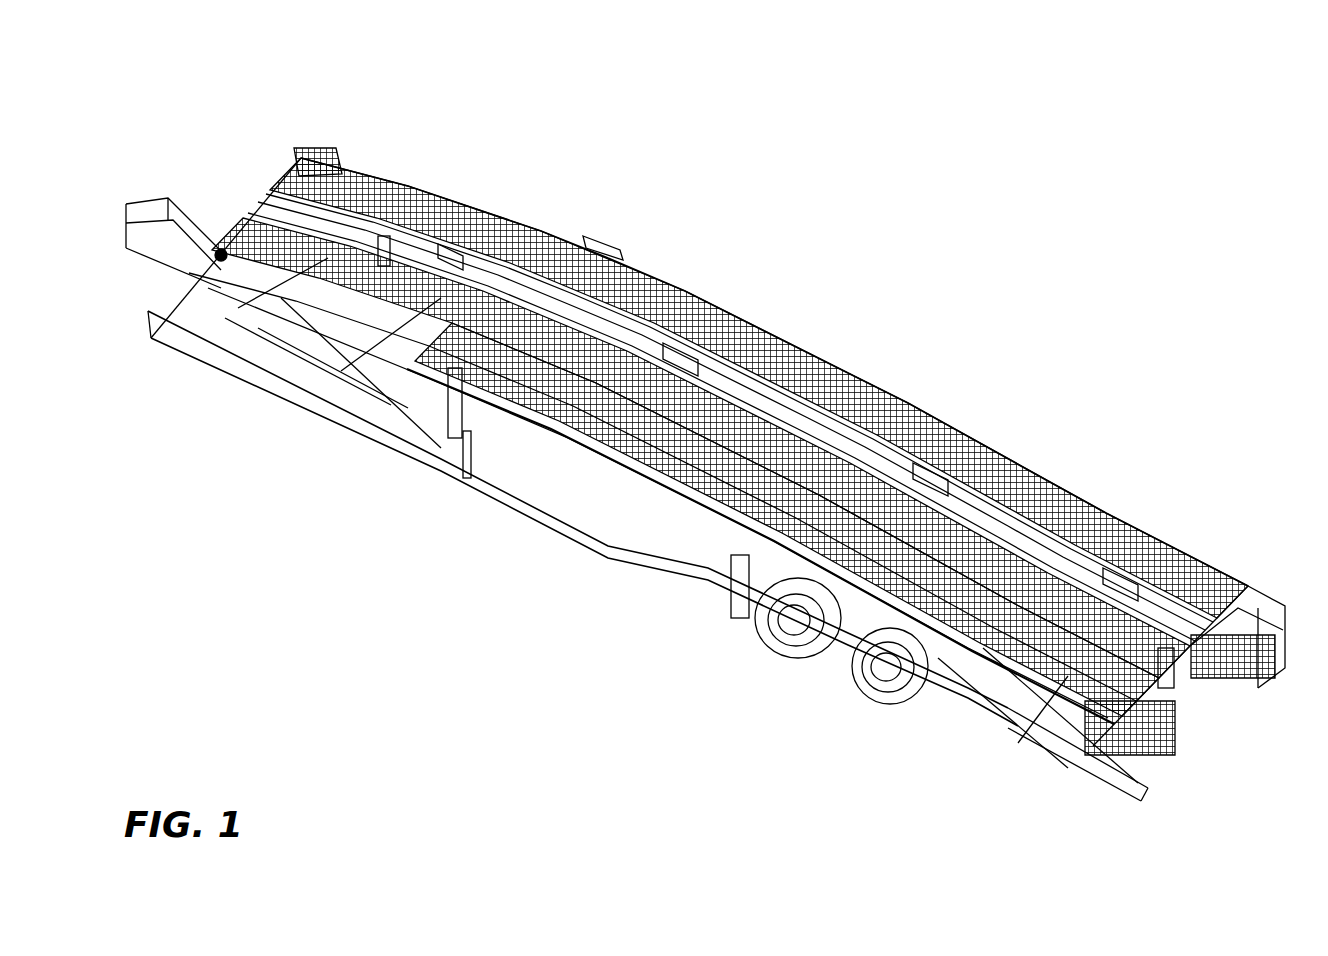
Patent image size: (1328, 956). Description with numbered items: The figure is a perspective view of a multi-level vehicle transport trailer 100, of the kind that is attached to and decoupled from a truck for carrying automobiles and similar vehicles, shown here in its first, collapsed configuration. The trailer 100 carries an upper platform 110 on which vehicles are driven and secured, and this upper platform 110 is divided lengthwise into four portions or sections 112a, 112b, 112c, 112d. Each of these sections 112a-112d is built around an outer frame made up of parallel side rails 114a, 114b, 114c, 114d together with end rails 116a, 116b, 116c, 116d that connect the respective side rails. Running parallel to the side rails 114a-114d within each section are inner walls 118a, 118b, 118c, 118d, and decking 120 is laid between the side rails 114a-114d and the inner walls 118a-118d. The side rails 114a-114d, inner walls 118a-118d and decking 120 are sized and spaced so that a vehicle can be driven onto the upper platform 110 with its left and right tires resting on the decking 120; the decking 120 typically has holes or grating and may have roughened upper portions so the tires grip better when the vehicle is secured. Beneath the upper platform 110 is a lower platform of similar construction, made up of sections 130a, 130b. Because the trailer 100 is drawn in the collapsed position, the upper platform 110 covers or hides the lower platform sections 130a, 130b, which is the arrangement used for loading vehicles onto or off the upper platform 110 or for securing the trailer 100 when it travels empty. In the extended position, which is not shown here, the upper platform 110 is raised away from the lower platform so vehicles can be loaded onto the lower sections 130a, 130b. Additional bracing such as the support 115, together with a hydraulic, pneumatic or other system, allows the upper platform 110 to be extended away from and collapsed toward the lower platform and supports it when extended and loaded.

The vehicle transport trailer 100 is at (1118, 108).
The upper platform 110 is at (880, 235).
The section 112a is at (585, 200).
The section 112b is at (738, 262).
The section 112c is at (962, 405).
The section 112d is at (1167, 507).
The side rail 114a is at (527, 222).
The side rail 114b is at (767, 322).
The side rail 114c is at (898, 408).
The side rail 114d is at (1098, 508).
The support 115 is at (682, 283).
The end rail 116a is at (377, 240).
The end rail 116b is at (533, 270).
The end rail 116c is at (765, 460).
The end rail 116d is at (1163, 657).
The inner wall 118a is at (443, 240).
The inner wall 118b is at (670, 343).
The inner wall 118c is at (920, 463).
The inner wall 118d is at (1110, 567).
The decking 120 is at (578, 268).
The lower platform section 130a is at (1137, 740).
The lower platform section 130b is at (1227, 667).